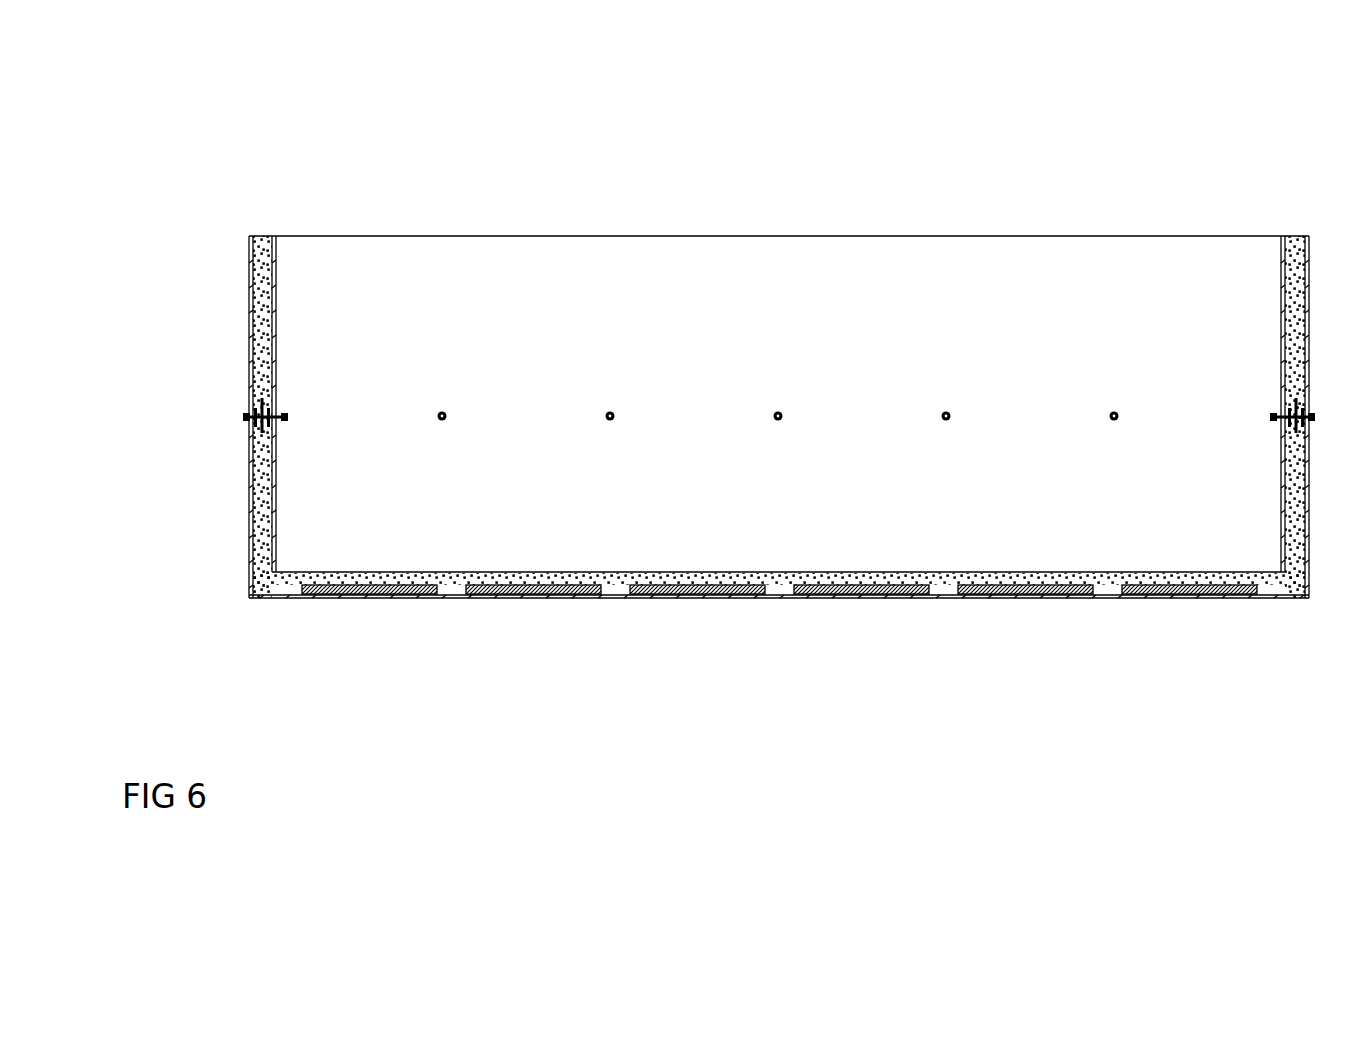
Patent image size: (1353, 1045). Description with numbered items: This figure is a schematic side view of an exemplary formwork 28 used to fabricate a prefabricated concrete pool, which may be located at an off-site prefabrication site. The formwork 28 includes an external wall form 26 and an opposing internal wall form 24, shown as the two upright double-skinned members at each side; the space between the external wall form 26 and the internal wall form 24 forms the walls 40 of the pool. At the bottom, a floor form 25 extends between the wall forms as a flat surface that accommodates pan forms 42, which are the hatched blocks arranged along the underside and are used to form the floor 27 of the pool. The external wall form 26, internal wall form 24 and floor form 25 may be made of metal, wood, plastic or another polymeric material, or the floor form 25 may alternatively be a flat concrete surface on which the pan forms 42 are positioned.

The formwork 28 is at (933, 175).
The external wall form 26 is at (249, 345).
The walls 40 is at (262, 245).
The internal wall form 24 is at (277, 491).
The floor 27 is at (620, 580).
The floor form 25 is at (790, 596).
The pan forms 42 is at (383, 598).